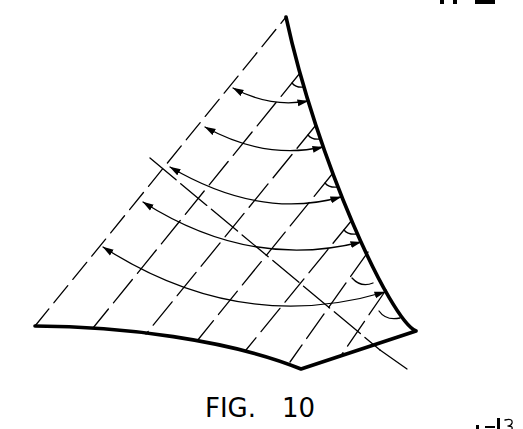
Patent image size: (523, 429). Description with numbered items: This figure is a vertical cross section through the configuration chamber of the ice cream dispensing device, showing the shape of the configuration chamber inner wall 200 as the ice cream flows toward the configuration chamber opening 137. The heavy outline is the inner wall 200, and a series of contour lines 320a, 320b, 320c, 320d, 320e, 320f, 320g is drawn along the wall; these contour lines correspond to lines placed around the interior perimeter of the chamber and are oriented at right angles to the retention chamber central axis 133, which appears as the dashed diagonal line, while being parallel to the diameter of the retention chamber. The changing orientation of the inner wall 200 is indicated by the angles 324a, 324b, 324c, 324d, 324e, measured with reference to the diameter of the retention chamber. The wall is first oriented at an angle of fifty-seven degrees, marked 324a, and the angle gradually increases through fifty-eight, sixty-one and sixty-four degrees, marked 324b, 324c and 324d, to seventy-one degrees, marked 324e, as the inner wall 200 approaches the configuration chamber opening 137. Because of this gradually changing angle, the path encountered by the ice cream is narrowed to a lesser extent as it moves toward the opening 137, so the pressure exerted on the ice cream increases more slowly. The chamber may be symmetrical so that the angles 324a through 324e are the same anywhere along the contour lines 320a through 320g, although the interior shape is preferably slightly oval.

The configuration chamber inner wall 200 is at (292, 58).
The contour line 320a is at (268, 36).
The contour line 320b is at (305, 80).
The contour line 320c is at (320, 128).
The contour line 320d is at (338, 182).
The contour line 320e is at (356, 230).
The contour line 320f is at (373, 283).
The contour line 320g is at (379, 311).
The angle 324a is at (260, 86).
The angle 324b is at (253, 133).
The angle 324c is at (251, 190).
The angle 324d is at (218, 238).
The angle 324e is at (197, 312).
The retention chamber central axis 133 is at (147, 160).
The configuration chamber opening 137 is at (369, 357).